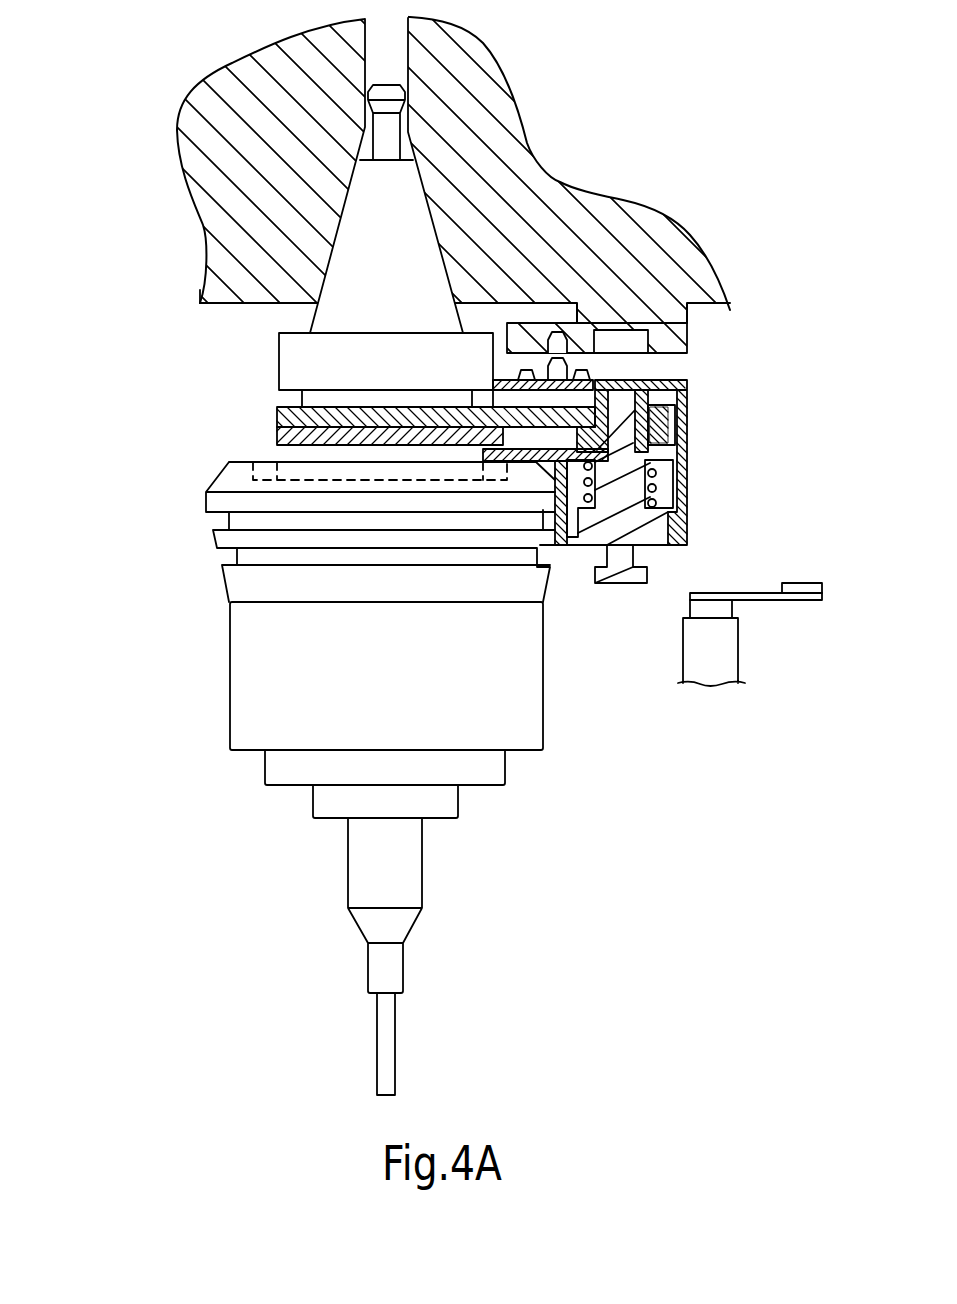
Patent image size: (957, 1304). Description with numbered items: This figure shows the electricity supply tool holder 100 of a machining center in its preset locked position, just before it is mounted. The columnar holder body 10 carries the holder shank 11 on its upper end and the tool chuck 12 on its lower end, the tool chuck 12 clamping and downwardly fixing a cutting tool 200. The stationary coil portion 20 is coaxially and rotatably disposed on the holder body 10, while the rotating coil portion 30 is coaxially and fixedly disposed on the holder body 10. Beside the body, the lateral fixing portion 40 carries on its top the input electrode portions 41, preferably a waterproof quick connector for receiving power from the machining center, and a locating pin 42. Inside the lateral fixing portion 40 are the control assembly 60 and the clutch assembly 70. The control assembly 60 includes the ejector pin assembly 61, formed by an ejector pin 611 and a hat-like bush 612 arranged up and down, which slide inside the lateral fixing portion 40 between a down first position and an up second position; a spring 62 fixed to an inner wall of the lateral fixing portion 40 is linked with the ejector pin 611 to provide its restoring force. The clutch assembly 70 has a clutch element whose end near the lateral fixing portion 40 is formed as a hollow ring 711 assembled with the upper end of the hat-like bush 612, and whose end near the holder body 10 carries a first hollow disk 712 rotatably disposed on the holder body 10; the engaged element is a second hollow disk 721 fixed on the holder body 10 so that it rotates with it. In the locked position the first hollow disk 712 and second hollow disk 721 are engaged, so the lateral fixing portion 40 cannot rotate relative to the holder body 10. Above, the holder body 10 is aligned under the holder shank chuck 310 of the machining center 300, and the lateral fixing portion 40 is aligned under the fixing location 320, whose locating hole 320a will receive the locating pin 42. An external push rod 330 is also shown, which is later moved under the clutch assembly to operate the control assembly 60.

The holder shank 11 is at (333, 247).
The machining center 300 is at (570, 187).
The holder shank chuck 310 is at (527, 145).
The fixing location 320 is at (680, 330).
The locating hole 320a is at (565, 337).
The holder body 10 is at (258, 393).
The locating pin 42 is at (567, 362).
The input electrode portions 41 is at (590, 378).
The lateral fixing portion 40 is at (685, 395).
The hollow ring 711 is at (668, 420).
The clutch assembly 70 is at (340, 426).
The first hollow disk 712 is at (278, 417).
The second hollow disk 721 is at (300, 437).
The ejector pin assembly 61 is at (711, 491).
The hat-like bush 612 is at (663, 437).
The ejector pin 611 is at (658, 527).
The spring 62 is at (588, 500).
The control assembly 60 is at (657, 557).
The external push rod 330 is at (727, 655).
The electricity supply tool holder 100 is at (330, 721).
The stationary coil portion 20 is at (210, 502).
The rotating coil portion 30 is at (247, 667).
The tool chuck 12 is at (398, 977).
The cutting tool 200 is at (387, 1070).